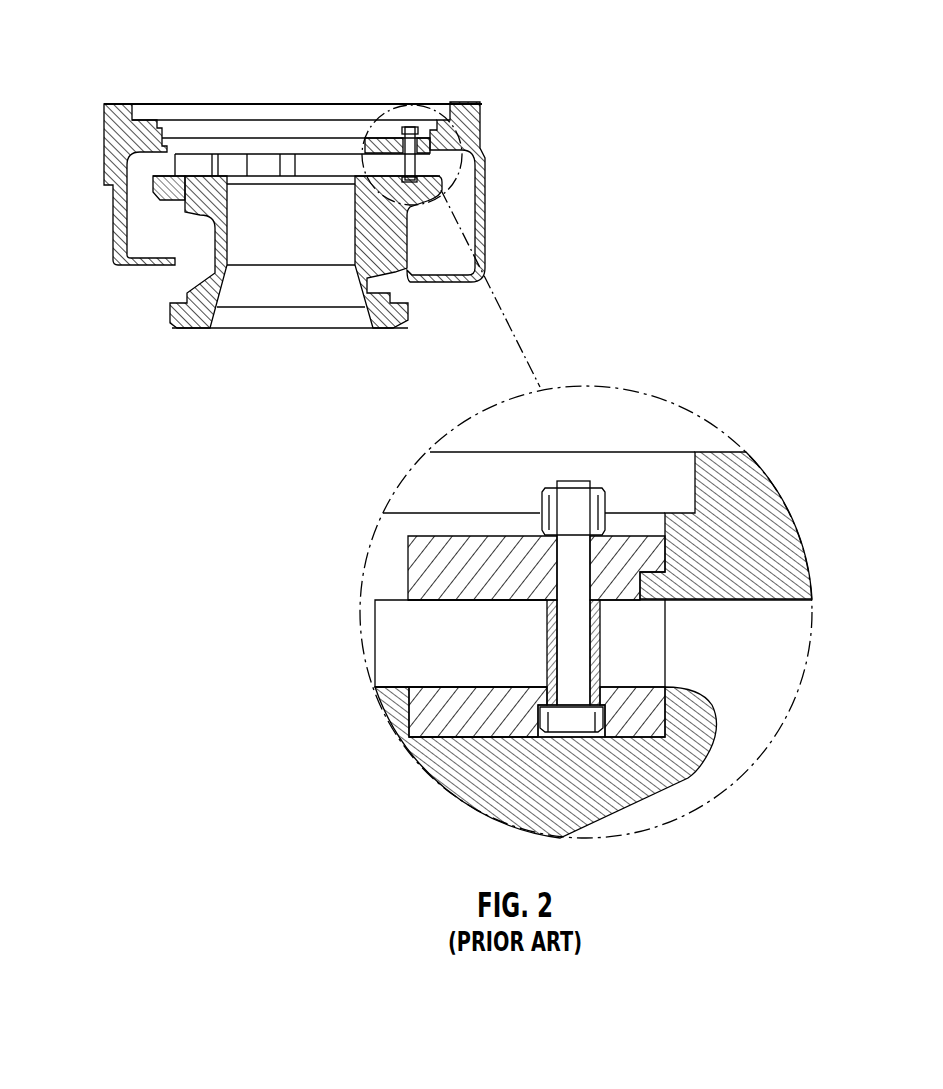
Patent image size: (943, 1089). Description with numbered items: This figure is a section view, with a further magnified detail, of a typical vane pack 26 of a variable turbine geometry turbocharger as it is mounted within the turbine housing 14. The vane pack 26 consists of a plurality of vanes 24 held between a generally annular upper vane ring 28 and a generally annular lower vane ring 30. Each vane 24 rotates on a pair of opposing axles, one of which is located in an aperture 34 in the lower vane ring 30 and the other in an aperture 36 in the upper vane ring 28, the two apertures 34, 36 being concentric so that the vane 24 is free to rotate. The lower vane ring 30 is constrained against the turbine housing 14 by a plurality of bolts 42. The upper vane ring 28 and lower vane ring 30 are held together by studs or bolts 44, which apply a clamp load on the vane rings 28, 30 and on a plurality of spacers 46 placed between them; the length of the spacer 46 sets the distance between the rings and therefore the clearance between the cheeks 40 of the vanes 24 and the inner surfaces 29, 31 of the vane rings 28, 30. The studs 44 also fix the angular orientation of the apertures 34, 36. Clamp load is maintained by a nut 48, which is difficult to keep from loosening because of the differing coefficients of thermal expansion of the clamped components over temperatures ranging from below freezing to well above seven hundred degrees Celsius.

The turbine housing 14 is at (687, 780).
The vane 24 is at (386, 610).
The vane pack 26 is at (723, 622).
The upper vane ring 28 is at (413, 546).
The inner surface of upper vane ring 29 is at (508, 603).
The lower vane ring 30 is at (440, 713).
The inner surface of lower vane ring 31 is at (507, 690).
The aperture in lower vane ring 34 is at (556, 692).
The aperture in upper vane ring 36 is at (592, 553).
The cheek 40 is at (512, 603).
The bolt 42 is at (158, 186).
The stud or bolt 44 is at (698, 601).
The spacer 46 is at (601, 668).
The nut 48 is at (600, 508).